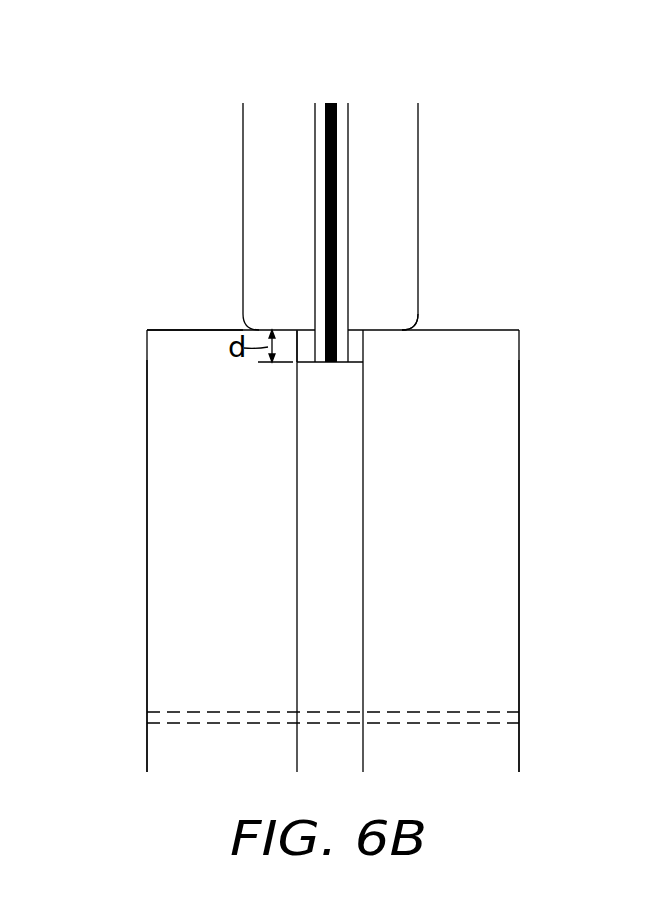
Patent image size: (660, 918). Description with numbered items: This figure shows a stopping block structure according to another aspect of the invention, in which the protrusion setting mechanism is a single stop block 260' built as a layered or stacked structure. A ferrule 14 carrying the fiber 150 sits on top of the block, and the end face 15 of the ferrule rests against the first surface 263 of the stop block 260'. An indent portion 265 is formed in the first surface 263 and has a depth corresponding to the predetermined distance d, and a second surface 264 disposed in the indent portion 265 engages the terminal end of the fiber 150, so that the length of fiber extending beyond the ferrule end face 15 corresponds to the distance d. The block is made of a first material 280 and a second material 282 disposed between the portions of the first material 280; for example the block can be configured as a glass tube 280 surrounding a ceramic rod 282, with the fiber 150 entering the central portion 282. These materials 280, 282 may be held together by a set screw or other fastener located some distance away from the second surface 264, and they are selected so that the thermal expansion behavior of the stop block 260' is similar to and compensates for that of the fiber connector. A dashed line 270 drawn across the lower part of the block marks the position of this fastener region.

The ferrule 14 is at (253, 138).
The end face of the ferrule 15 is at (378, 329).
The fiber 150 is at (331, 103).
The stop block 260' is at (285, 551).
The first surface 263 is at (183, 330).
The second surface 264 is at (312, 360).
The indent portion 265 is at (352, 343).
The cleave line 270 is at (483, 710).
The first material 280 is at (249, 510).
The second material 282 is at (357, 510).